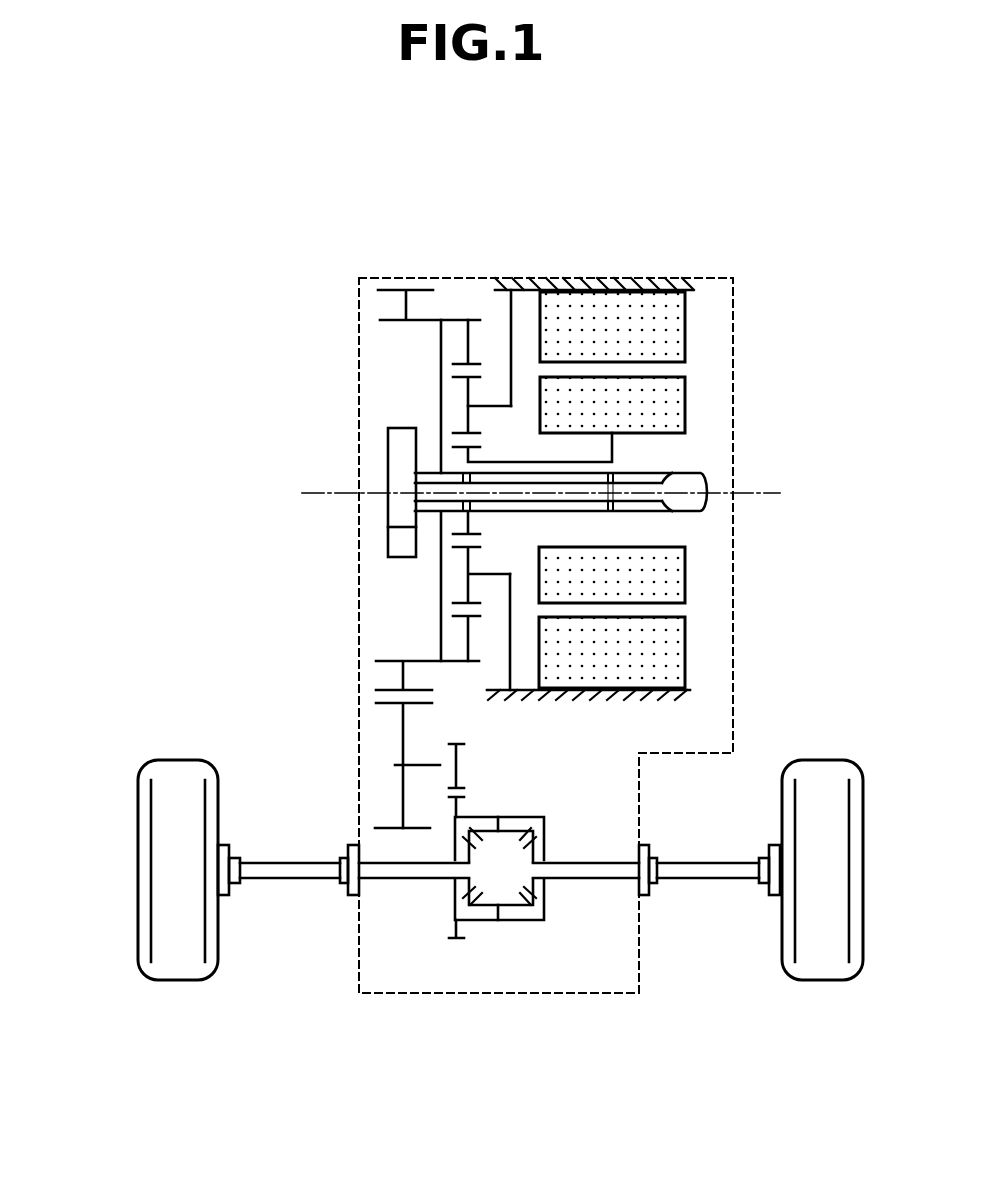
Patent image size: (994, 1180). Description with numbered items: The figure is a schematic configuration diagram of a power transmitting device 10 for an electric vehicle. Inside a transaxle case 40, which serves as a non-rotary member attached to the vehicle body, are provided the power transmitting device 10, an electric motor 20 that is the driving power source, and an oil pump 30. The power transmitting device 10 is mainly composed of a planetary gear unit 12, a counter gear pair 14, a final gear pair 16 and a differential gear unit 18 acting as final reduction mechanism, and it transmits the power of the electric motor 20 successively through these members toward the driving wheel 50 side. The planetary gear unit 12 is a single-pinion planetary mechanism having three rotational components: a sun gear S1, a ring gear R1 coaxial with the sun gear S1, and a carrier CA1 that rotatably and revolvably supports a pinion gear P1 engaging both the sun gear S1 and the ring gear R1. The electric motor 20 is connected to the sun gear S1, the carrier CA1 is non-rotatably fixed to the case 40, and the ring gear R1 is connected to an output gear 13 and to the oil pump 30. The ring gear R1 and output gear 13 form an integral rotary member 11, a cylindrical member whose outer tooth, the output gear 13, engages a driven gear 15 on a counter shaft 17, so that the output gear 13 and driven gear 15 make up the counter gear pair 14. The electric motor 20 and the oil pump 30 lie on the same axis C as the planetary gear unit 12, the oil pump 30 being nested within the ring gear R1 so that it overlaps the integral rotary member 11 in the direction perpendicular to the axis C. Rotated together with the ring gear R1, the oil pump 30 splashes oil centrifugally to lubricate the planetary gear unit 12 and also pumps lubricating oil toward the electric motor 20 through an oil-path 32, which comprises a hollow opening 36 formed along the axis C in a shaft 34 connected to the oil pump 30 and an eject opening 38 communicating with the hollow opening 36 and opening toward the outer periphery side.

The power transmitting device 10 is at (172, 156).
The integral rotary member 11 is at (441, 268).
The planetary gear unit 12 is at (532, 442).
The output gear 13 is at (385, 290).
The counter gear pair 14 is at (356, 696).
The driven gear 15 is at (378, 836).
The final gear pair 16 is at (486, 780).
The counter shaft 17 is at (423, 763).
The differential gear unit 18 is at (539, 942).
The electric motor 20 is at (720, 340).
The oil pump 30 is at (395, 458).
The oil-path 32 is at (652, 487).
The shaft 34 is at (692, 500).
The hollow opening 36 is at (630, 497).
The eject opening 38 is at (615, 472).
The case 40 is at (667, 278).
The driving wheel 50 is at (178, 975).
The ring gear R1 is at (473, 365).
The pinion gear P1 is at (470, 378).
The carrier CA1 is at (470, 409).
The sun gear S1 is at (470, 447).
The axis C is at (553, 493).